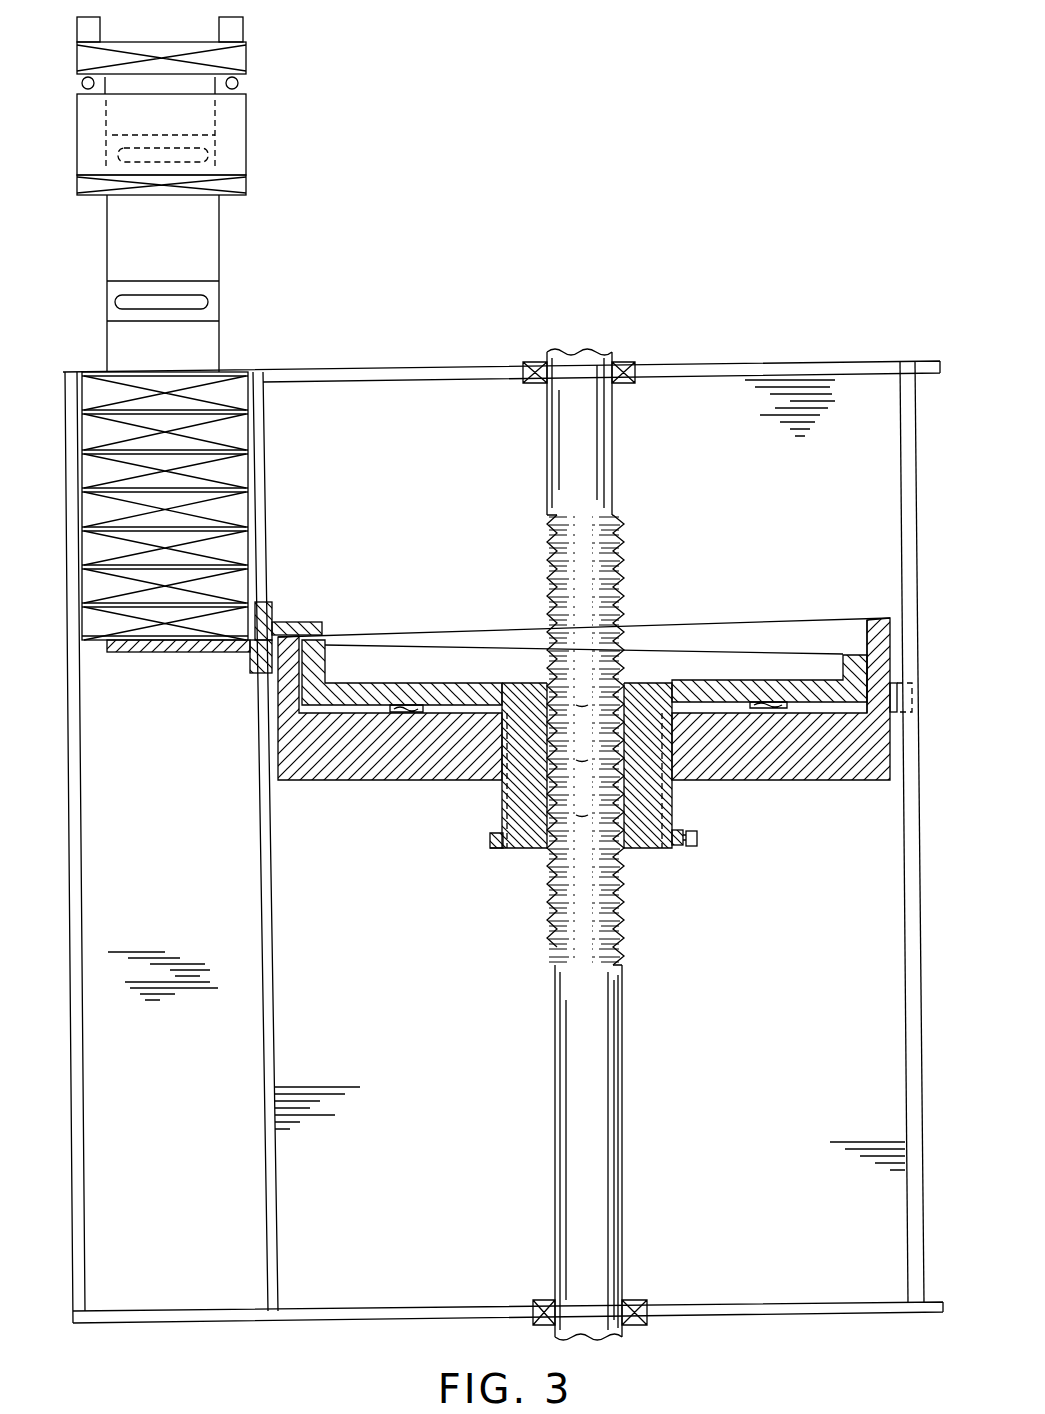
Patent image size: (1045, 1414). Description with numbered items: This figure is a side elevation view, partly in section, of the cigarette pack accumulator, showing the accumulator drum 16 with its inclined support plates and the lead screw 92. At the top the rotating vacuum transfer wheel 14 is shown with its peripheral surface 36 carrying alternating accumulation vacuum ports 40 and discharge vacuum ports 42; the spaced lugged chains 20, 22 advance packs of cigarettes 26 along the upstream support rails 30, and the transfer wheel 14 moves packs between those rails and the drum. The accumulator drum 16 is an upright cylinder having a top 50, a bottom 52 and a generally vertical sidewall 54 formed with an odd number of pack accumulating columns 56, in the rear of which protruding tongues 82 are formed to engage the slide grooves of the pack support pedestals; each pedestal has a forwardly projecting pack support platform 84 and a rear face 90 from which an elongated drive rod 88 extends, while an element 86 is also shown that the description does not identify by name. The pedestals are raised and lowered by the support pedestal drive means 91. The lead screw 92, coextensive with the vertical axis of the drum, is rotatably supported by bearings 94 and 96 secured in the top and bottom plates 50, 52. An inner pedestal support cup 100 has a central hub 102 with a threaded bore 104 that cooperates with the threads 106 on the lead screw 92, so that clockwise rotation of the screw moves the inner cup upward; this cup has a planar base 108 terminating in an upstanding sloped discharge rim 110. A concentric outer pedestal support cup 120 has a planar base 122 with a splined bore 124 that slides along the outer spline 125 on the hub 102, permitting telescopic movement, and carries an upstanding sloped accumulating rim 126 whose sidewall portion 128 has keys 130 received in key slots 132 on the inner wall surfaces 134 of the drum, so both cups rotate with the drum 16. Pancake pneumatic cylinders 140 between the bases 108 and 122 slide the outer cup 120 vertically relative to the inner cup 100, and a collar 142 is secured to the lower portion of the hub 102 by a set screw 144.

The vacuum transfer wheel 14 is at (195, 323).
The accumulator drum 16 is at (503, 821).
The lugged chain 20 is at (95, 28).
The lugged chain 22 is at (235, 25).
The packs of cigarettes 26 is at (225, 56).
The upstream support rails 30 is at (238, 82).
The peripheral surface 36 is at (196, 250).
The accumulation vacuum port 40 is at (200, 153).
The discharge vacuum port 42 is at (198, 300).
The top 50 is at (430, 366).
The bottom 52 is at (193, 1322).
The sidewall 54 is at (70, 815).
The pack accumulating columns 56 is at (142, 890).
The protruding tongues 82 is at (272, 880).
The pack support platform 84 is at (130, 652).
The bracket 86 is at (250, 662).
The elongated rod 88 is at (300, 623).
The rear face 90 is at (274, 605).
The support pedestal drive means 91 is at (624, 708).
The lead screw 92 is at (622, 818).
The bearing 94 is at (625, 360).
The bearing 96 is at (648, 1300).
The inner pedestal support cup 100 is at (458, 674).
The central hub 102 is at (662, 790).
The central threaded bore 104 is at (600, 840).
The threads 106 is at (603, 930).
The planar base 108 is at (490, 690).
The sloped discharge rim 110 is at (430, 645).
The outer pedestal support cup 120 is at (800, 625).
The planar base 122 is at (360, 770).
The central splined bore 124 is at (505, 770).
The outer spline 125 is at (503, 815).
The sloped accumulating rim 126 is at (655, 622).
The sidewall portion 128 is at (882, 645).
The key 130 is at (898, 697).
The key slot 132 is at (905, 1005).
The inner wall surfaces 134 is at (922, 915).
The pancake pneumatic cylinders 140 is at (400, 709).
The collar 142 is at (495, 850).
The set screw 144 is at (698, 838).